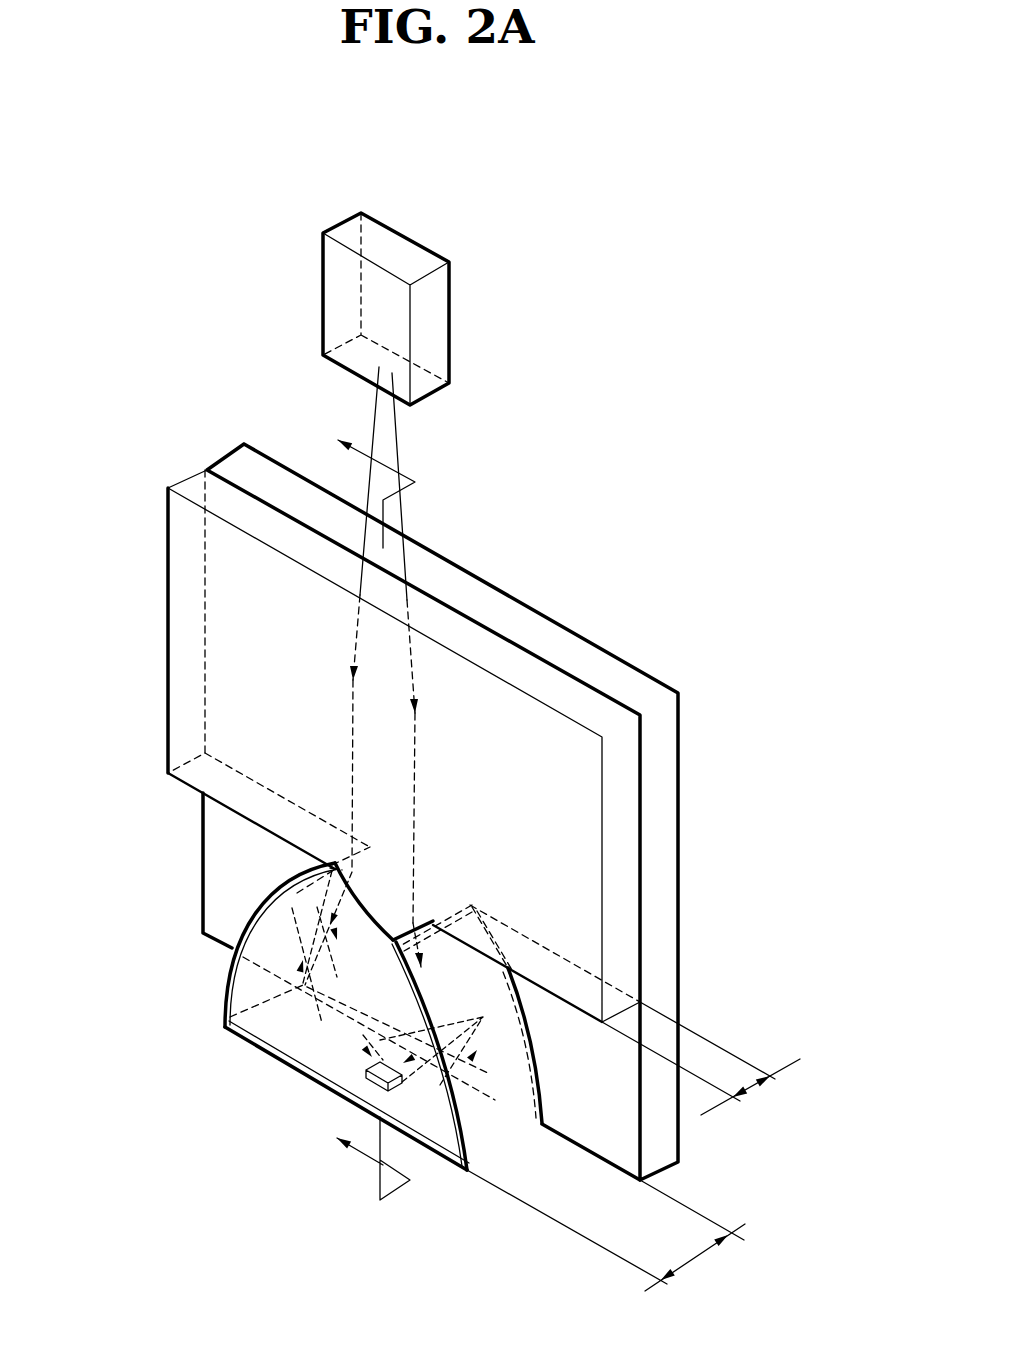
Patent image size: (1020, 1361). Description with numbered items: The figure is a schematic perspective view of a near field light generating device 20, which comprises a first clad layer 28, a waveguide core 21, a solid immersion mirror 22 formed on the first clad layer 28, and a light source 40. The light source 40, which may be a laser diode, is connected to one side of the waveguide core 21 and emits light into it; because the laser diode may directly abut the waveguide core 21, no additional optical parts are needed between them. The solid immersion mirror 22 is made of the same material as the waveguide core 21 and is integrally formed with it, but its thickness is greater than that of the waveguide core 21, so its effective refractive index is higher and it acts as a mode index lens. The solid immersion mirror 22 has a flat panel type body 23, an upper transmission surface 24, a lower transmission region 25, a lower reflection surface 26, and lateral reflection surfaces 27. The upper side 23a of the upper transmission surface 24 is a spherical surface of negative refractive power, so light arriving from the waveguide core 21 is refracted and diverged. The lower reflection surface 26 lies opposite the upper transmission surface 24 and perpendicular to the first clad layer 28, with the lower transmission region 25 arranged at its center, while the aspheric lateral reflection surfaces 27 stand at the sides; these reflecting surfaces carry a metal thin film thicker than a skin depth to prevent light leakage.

The near field light generating device 20 is at (695, 378).
The waveguide core 21 is at (622, 770).
The solid immersion mirror 22 is at (113, 873).
The flat panel type body 23 is at (255, 975).
The upper side of the upper transmission surface 23a is at (337, 928).
The upper transmission surface 24 is at (387, 900).
The lower transmission region 25 is at (335, 1092).
The lower reflection surface 26 is at (262, 1050).
The lateral reflection surfaces 27 is at (450, 1018).
The first clad layer 28 is at (638, 692).
The light source 40 is at (443, 288).